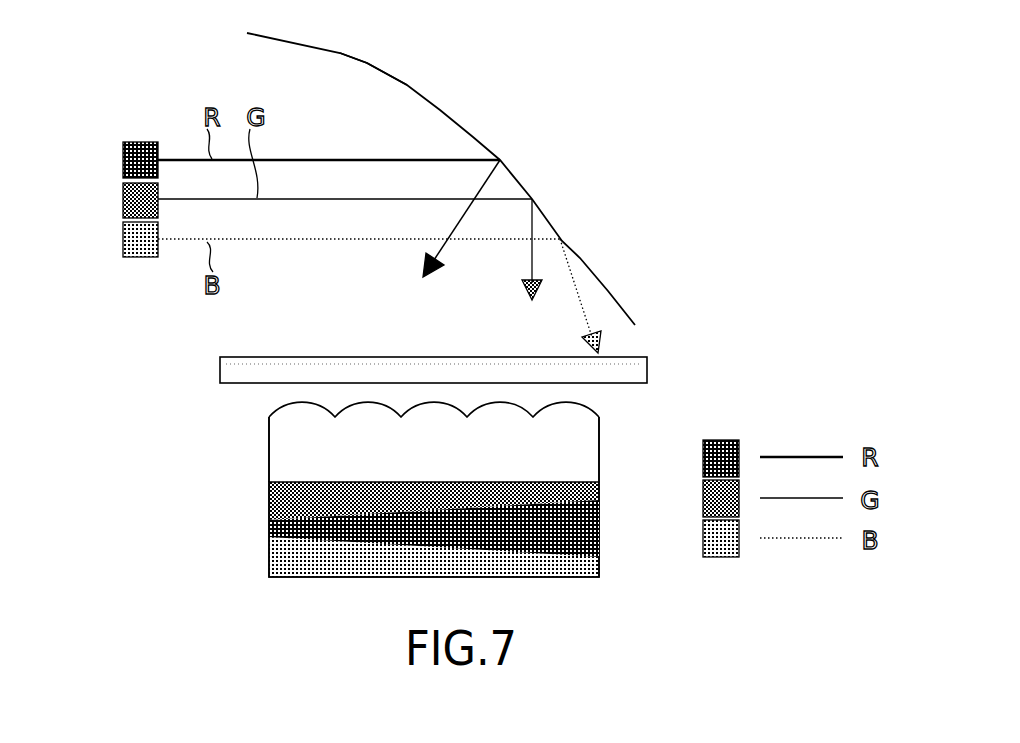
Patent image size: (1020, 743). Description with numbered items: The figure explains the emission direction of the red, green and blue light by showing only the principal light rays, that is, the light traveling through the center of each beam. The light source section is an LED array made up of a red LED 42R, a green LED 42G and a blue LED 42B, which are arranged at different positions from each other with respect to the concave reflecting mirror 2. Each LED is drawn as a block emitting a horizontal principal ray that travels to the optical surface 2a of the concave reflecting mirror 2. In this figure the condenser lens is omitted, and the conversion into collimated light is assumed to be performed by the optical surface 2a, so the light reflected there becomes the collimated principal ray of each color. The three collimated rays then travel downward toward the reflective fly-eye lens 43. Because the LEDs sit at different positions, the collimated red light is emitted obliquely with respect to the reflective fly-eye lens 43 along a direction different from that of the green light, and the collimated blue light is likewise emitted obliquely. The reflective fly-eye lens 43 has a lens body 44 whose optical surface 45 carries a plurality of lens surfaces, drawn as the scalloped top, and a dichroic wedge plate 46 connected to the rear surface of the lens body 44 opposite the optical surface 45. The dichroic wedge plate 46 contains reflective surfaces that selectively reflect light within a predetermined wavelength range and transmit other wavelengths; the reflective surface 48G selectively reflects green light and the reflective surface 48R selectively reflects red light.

The concave reflecting mirror 2 is at (352, 58).
The optical surface 2a is at (367, 64).
The red LED 42R is at (123, 160).
The green LED 42G is at (123, 198).
The blue LED 42B is at (123, 238).
The reflective fly-eye lens 43 is at (614, 427).
The lens body 44 is at (599, 450).
The optical surface 45 is at (278, 401).
The dichroic wedge plate 46 is at (599, 528).
The reflective surface 48G is at (308, 482).
The reflective surface 48R is at (269, 513).